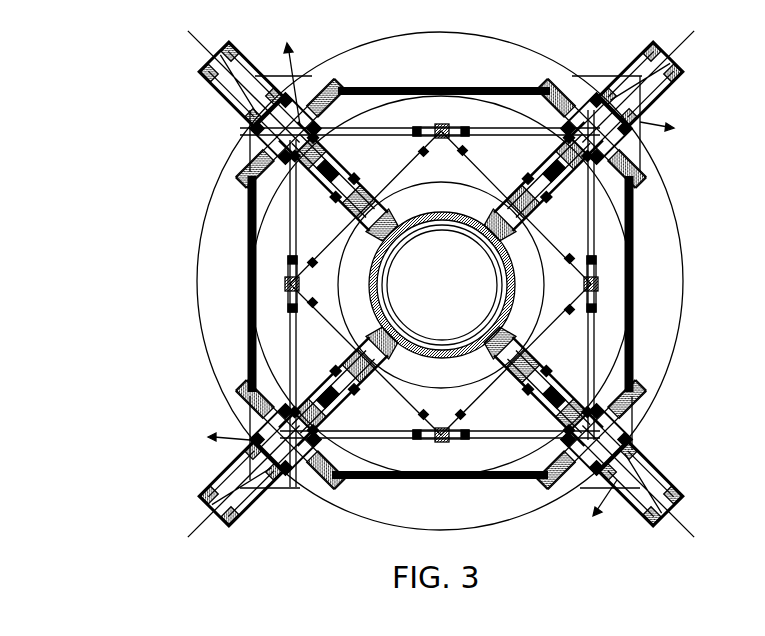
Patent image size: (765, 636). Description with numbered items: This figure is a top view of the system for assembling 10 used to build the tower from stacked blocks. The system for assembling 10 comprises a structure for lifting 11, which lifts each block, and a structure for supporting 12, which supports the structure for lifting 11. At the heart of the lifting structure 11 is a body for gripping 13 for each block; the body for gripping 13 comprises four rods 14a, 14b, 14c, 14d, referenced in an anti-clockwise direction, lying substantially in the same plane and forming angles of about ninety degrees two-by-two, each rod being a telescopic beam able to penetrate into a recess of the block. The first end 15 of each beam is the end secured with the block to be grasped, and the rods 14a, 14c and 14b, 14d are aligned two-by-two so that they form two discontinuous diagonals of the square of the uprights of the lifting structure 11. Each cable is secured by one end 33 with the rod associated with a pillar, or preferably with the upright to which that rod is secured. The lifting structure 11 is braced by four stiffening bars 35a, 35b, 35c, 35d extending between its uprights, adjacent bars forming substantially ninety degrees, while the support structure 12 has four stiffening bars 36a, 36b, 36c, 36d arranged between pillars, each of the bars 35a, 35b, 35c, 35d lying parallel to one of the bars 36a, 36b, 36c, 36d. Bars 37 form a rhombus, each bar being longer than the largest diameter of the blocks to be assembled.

The system for assembling 10 is at (131, 286).
The structure for lifting 11 is at (485, 441).
The structure for supporting 12 is at (631, 322).
The body for gripping 13 is at (490, 392).
The rod 14a is at (345, 473).
The rod 14b is at (626, 394).
The rod 14c is at (600, 185).
The rod 14d is at (305, 178).
The first end of the beam 15 is at (393, 322).
The end of the cable 33 is at (300, 130).
The stiffening bar 35a is at (369, 432).
The stiffening bar 35b is at (594, 363).
The stiffening bar 35c is at (468, 112).
The stiffening bar 35d is at (287, 272).
The stiffening bar 36a is at (406, 479).
The stiffening bar 36b is at (635, 287).
The stiffening bar 36c is at (414, 70).
The stiffening bar 36d is at (247, 317).
The bar 37 is at (549, 345).